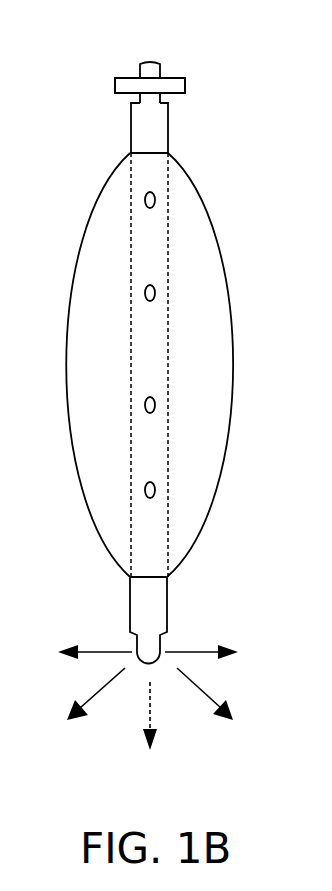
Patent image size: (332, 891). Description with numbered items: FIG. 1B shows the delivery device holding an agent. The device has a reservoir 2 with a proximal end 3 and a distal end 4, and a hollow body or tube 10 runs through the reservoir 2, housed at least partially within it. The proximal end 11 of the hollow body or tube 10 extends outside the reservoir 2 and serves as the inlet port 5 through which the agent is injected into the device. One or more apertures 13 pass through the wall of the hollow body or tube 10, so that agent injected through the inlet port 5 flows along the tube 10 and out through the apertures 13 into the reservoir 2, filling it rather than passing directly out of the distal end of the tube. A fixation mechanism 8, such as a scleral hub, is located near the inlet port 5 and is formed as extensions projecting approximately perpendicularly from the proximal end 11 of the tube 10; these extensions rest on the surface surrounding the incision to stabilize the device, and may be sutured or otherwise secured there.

The reservoir 2 is at (87, 305).
The proximal end 3 is at (130, 152).
The distal end 4 is at (128, 578).
The inlet port 5 is at (152, 63).
The fixation mechanism 8 is at (185, 85).
The hollow body or tube 10 is at (158, 345).
The proximal end 11 is at (133, 85).
The apertures 13 is at (157, 403).